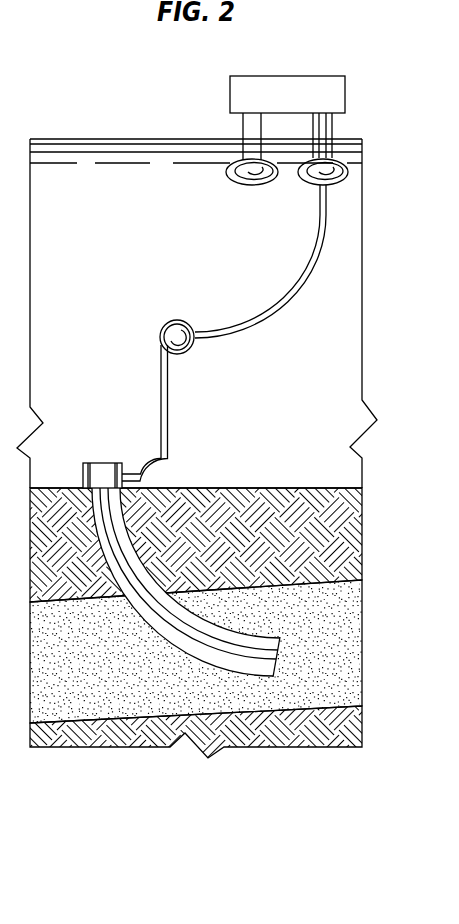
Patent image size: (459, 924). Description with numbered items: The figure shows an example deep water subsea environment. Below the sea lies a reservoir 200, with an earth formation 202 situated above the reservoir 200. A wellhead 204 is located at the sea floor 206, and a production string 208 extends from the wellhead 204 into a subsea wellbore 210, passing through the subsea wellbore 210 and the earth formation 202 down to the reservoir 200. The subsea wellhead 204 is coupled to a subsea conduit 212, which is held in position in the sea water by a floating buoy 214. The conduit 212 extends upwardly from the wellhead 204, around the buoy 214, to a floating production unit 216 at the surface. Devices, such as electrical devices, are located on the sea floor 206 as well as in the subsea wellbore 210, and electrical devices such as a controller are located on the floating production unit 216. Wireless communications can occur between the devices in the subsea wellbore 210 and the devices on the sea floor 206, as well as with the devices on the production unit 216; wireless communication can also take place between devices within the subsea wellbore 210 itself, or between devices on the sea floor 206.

The reservoir 200 is at (120, 668).
The earth formation 202 is at (322, 546).
The wellhead 204 is at (100, 463).
The sea floor 206 is at (305, 488).
The production string 208 is at (118, 540).
The subsea wellbore 210 is at (140, 566).
The subsea conduit 212 is at (167, 398).
The floating buoy 214 is at (161, 329).
The floating production unit 216 is at (230, 97).